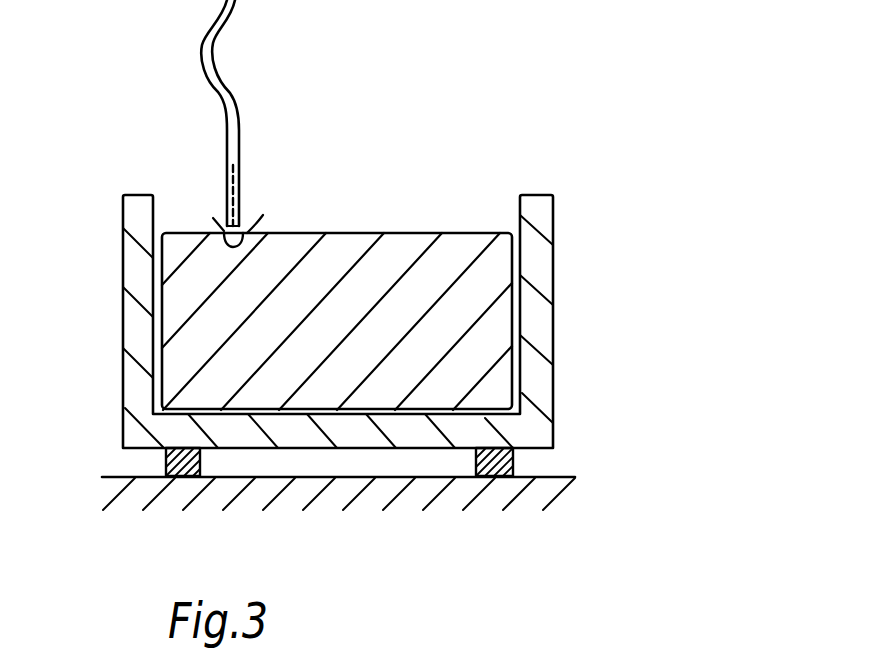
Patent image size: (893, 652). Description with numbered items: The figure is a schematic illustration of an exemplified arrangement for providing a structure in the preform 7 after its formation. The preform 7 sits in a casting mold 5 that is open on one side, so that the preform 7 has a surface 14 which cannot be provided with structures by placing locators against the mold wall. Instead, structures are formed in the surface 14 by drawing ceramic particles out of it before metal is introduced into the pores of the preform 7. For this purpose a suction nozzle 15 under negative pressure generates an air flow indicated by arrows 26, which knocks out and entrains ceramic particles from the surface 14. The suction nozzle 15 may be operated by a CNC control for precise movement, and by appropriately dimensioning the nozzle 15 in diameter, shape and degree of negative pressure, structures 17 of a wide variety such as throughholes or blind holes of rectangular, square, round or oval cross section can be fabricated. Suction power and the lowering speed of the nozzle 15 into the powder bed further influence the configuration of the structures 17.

The surface 14 is at (482, 233).
The preform 7 is at (185, 314).
The casting mold 5 is at (133, 435).
The suction nozzle 15 is at (238, 232).
The arrows 26 is at (228, 205).
The structures 17 is at (243, 238).